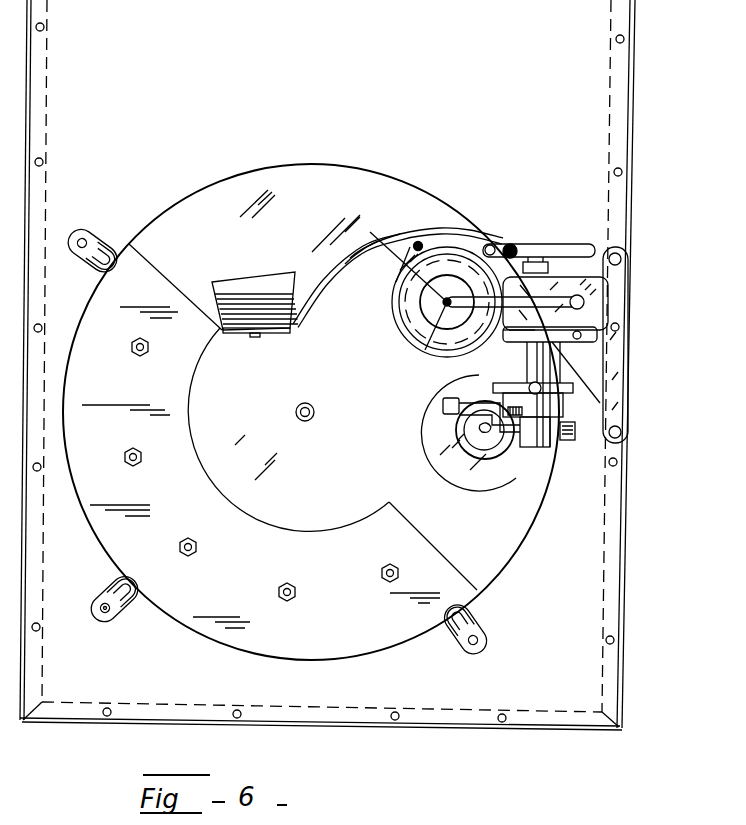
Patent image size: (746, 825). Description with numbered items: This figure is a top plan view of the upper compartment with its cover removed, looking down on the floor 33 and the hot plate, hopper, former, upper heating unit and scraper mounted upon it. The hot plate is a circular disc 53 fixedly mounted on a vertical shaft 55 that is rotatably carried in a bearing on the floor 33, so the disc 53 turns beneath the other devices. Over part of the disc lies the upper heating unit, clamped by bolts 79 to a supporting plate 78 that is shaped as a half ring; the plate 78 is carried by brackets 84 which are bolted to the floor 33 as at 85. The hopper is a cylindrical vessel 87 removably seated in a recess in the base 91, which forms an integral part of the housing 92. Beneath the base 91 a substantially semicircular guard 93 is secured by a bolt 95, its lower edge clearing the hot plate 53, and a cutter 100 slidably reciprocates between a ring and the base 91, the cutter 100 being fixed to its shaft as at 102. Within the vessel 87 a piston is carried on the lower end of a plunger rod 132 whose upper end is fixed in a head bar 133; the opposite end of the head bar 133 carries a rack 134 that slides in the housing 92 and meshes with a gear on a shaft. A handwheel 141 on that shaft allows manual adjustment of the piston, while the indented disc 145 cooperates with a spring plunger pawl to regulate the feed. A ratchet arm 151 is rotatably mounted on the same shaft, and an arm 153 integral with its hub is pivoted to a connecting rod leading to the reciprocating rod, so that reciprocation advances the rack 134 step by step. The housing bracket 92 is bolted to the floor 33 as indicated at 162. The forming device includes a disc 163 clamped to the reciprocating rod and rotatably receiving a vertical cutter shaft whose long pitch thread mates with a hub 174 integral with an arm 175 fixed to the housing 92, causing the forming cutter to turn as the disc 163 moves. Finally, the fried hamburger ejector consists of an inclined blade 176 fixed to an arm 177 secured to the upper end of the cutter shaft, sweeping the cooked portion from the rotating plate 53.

The floor 33 is at (327, 365).
The circular disc 53 is at (392, 200).
The vertical shaft 55 is at (305, 422).
The supporting plate 78 is at (292, 641).
The bolts 79 is at (292, 598).
The brackets 84 is at (100, 245).
The bolting of brackets to floor 85 is at (102, 603).
The cylindrical vessel 87 is at (382, 310).
The base 91 is at (413, 345).
The housing 92 is at (614, 314).
The guard 93 is at (390, 295).
The bolt 95 is at (422, 245).
The cutter 100 is at (405, 338).
The fixing of cutter to shaft 102 is at (513, 245).
The plunger rod 132 is at (374, 242).
The head bar 133 is at (588, 268).
The rack 134 is at (585, 296).
The handwheel 141 is at (549, 247).
The disc 145 is at (563, 442).
The ratchet arm 151 is at (443, 410).
The arm 153 is at (530, 484).
The bolting of bracket to floor 162 is at (620, 436).
The disc 163 is at (447, 488).
The hub 174 is at (450, 455).
The arm 175 is at (442, 382).
The inclined blade 176 is at (228, 295).
The arm 177 is at (373, 240).